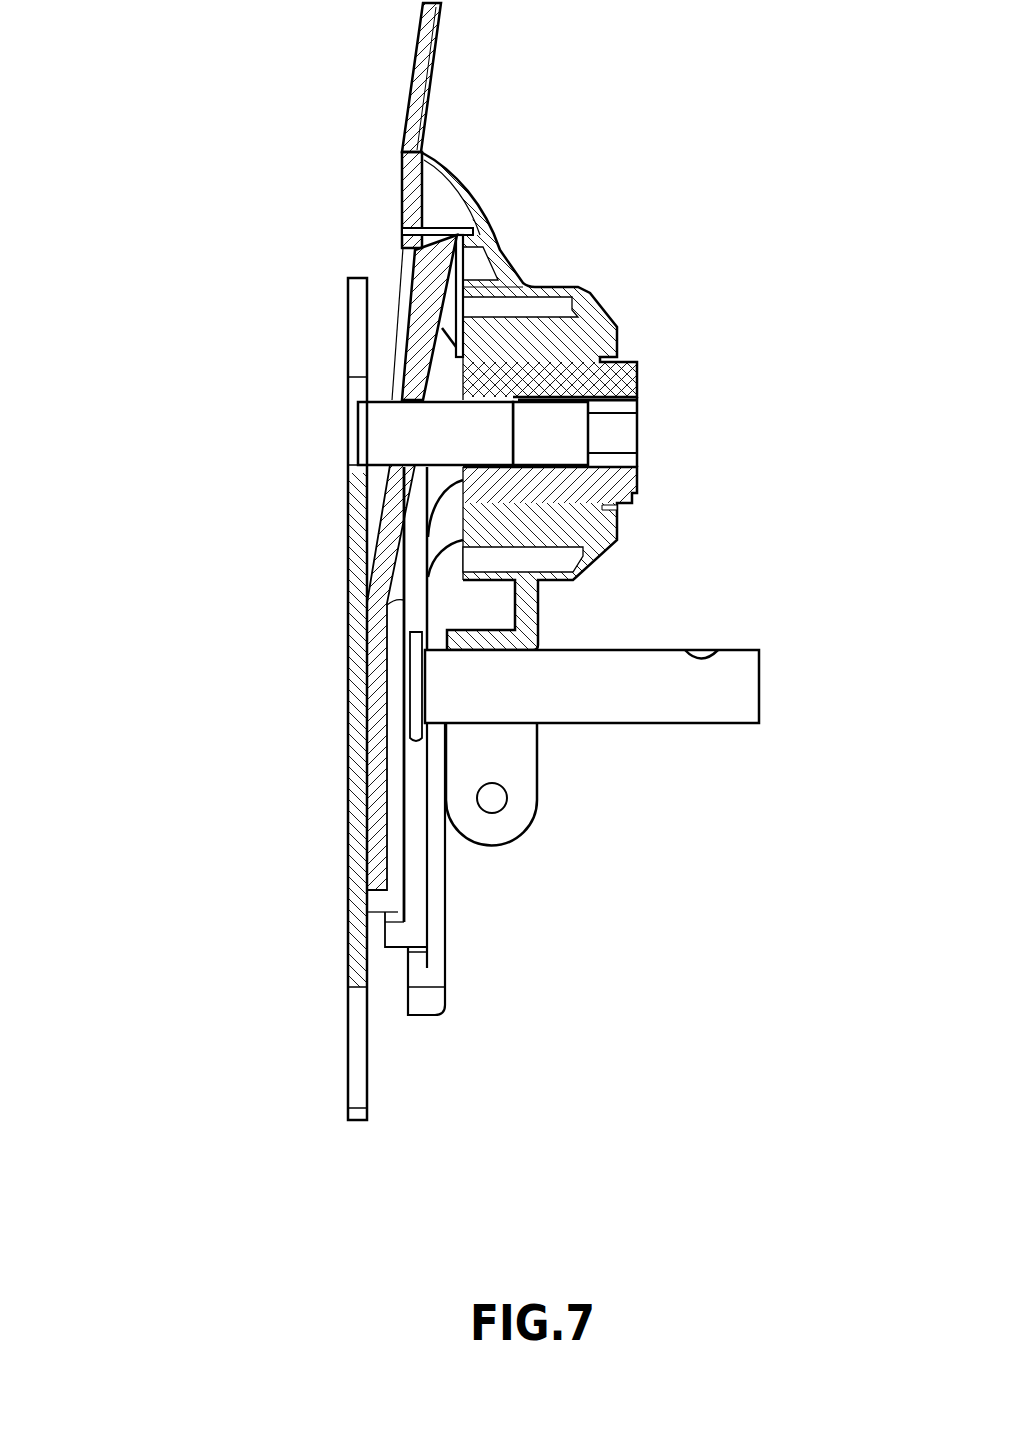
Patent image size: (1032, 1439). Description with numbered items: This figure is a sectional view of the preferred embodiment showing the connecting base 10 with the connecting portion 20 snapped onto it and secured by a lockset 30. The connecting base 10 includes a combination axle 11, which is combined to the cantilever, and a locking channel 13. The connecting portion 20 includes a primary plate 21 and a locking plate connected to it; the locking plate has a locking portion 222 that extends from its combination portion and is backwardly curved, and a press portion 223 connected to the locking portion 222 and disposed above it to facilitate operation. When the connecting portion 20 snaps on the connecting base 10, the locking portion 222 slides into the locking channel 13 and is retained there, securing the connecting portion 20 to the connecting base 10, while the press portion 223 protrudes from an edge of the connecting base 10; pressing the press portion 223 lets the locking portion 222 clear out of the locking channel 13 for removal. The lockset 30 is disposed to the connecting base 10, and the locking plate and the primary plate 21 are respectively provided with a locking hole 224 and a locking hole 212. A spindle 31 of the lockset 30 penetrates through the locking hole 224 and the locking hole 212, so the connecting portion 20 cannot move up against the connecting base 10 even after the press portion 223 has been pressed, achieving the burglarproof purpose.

The connecting base 10 is at (692, 220).
The combination axle 11 is at (650, 695).
The locking channel 13 is at (447, 230).
The connecting portion 20 is at (213, 752).
The primary plate 21 is at (357, 932).
The locking hole 212 is at (355, 423).
The locking portion 222 is at (440, 247).
The press portion 223 is at (415, 96).
The locking hole 224 is at (398, 397).
The lockset 30 is at (622, 437).
The spindle 31 is at (388, 440).